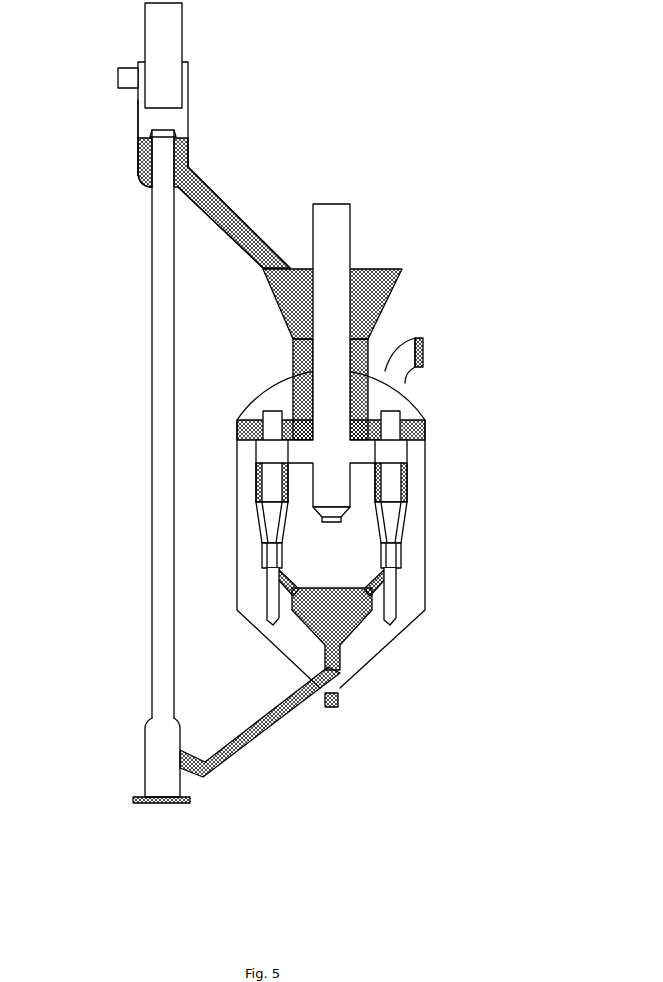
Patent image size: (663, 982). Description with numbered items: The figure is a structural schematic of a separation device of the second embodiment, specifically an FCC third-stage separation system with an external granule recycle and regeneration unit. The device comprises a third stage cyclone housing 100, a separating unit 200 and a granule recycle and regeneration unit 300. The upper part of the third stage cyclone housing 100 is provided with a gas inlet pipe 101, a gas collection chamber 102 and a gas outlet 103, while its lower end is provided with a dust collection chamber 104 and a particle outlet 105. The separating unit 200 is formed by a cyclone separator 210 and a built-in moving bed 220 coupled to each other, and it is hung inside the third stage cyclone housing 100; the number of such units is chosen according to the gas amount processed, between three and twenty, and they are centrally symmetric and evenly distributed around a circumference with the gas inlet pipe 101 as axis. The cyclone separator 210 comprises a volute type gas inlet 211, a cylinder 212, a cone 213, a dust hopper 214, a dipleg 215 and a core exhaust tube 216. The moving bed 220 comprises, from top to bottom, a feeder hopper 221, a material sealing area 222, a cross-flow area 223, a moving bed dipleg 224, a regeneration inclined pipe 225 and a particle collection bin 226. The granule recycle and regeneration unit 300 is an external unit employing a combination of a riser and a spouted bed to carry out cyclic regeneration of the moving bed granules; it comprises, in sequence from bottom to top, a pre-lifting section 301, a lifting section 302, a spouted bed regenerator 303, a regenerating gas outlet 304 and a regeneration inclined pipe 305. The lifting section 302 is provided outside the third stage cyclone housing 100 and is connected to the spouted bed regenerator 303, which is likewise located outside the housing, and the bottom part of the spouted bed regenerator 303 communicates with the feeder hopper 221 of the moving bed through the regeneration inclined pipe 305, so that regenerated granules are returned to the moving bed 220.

The third stage cyclone housing 100 is at (422, 414).
The gas inlet pipe 101 is at (354, 231).
The gas collection chamber 102 is at (271, 393).
The gas outlet 103 is at (427, 346).
The dust collection chamber 104 is at (296, 662).
The particle outlet 105 is at (340, 698).
The separating unit 200 is at (275, 325).
The cyclone separator 210 is at (251, 497).
The volute type gas inlet 211 is at (325, 485).
The cylinder 212 is at (253, 471).
The cone 213 is at (252, 516).
The dust hopper 214 is at (254, 552).
The dipleg 215 is at (262, 591).
The core exhaust tube 216 is at (268, 436).
The built-in moving bed 220 is at (409, 497).
The feeder hopper 221 is at (385, 309).
The material sealing area 222 is at (407, 441).
The cross-flow area 223 is at (409, 477).
The moving bed dipleg 224 is at (402, 556).
The regeneration inclined pipe 225 is at (397, 578).
The particle collection bin 226 is at (347, 620).
The granule recycle and regeneration unit 300 is at (198, 48).
The pre-lifting section 301 is at (143, 760).
The lifting section 302 is at (150, 380).
The spouted bed regenerator 303 is at (136, 120).
The regenerating gas outlet 304 is at (116, 66).
The regeneration inclined pipe 305 is at (233, 204).